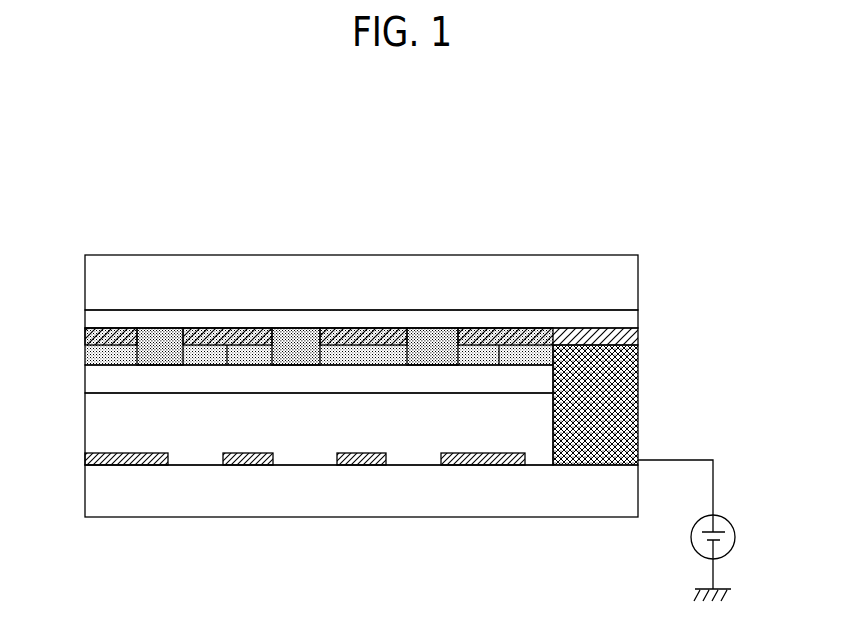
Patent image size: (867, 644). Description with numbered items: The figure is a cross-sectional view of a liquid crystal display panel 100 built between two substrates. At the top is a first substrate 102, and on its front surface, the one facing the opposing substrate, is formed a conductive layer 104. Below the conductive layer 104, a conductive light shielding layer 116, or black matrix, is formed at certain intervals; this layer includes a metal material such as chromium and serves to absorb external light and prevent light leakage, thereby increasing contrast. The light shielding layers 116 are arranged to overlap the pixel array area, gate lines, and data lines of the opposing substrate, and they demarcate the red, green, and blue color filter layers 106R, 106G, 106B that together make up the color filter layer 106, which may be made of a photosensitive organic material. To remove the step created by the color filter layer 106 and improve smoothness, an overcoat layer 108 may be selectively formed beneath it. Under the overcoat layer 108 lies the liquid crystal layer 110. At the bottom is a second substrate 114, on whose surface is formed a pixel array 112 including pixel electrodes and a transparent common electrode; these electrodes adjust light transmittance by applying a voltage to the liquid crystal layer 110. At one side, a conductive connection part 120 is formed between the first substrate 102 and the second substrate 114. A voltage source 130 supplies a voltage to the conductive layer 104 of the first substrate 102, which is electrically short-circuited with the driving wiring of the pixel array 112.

The liquid crystal display panel 100 is at (541, 197).
The first substrate 102 is at (92, 281).
The conductive layer 104 is at (92, 319).
The color filter layer 106 is at (92, 351).
The red color filter layer 106R is at (160, 337).
The green color filter layer 106G is at (297, 338).
The blue color filter layer 106B is at (433, 338).
The overcoat layer 108 is at (92, 377).
The liquid crystal layer 110 is at (92, 420).
The pixel array 112 is at (92, 458).
The second substrate 114 is at (92, 491).
The conductive light shielding layer 116 is at (639, 337).
The conductive connection part 120 is at (628, 406).
The voltage source 130 is at (735, 515).